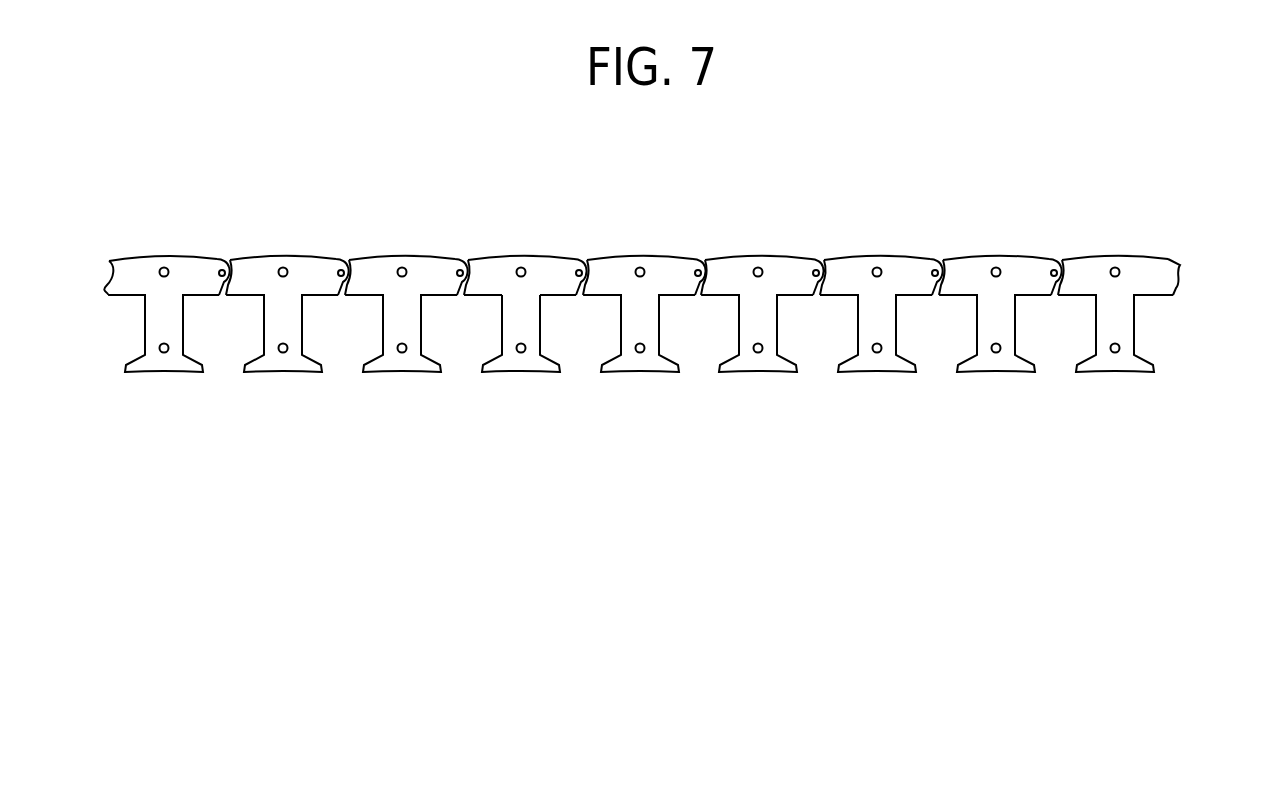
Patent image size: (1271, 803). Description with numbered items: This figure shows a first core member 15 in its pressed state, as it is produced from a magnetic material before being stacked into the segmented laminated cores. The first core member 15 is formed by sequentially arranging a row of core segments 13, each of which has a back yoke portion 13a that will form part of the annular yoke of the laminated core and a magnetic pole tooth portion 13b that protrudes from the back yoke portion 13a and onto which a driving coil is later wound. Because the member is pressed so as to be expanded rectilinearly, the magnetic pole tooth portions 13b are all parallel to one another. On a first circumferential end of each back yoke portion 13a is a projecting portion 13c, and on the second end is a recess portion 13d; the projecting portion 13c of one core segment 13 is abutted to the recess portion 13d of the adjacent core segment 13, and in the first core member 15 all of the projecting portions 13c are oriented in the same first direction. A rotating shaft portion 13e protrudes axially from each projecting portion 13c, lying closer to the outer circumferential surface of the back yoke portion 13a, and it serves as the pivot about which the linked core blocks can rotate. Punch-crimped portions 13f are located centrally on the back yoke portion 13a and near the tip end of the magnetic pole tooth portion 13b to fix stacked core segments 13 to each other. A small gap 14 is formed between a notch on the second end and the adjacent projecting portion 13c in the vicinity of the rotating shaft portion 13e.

The core segment 13 is at (528, 317).
The back yoke portion 13a is at (550, 270).
The magnetic pole tooth portion 13b is at (523, 332).
The projecting portion 13c is at (581, 267).
The recess portion 13d is at (467, 261).
The rotating shaft portion 13e is at (697, 268).
The punch-crimped portions 13f is at (643, 276).
The gap 14 is at (822, 258).
The first core member 15 is at (686, 317).